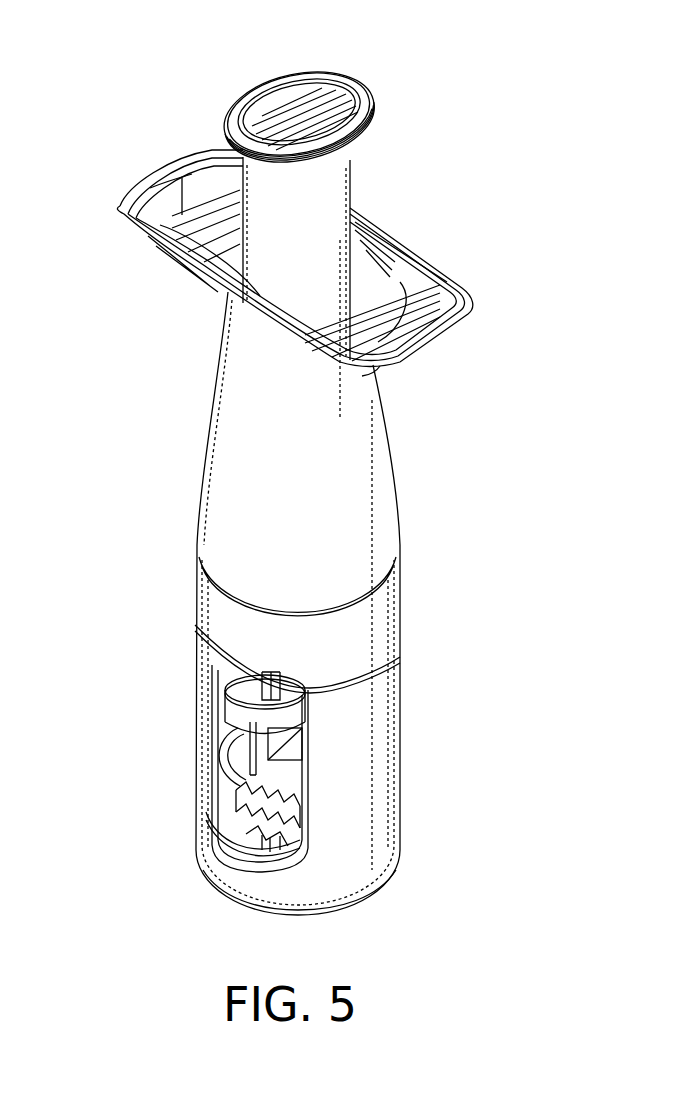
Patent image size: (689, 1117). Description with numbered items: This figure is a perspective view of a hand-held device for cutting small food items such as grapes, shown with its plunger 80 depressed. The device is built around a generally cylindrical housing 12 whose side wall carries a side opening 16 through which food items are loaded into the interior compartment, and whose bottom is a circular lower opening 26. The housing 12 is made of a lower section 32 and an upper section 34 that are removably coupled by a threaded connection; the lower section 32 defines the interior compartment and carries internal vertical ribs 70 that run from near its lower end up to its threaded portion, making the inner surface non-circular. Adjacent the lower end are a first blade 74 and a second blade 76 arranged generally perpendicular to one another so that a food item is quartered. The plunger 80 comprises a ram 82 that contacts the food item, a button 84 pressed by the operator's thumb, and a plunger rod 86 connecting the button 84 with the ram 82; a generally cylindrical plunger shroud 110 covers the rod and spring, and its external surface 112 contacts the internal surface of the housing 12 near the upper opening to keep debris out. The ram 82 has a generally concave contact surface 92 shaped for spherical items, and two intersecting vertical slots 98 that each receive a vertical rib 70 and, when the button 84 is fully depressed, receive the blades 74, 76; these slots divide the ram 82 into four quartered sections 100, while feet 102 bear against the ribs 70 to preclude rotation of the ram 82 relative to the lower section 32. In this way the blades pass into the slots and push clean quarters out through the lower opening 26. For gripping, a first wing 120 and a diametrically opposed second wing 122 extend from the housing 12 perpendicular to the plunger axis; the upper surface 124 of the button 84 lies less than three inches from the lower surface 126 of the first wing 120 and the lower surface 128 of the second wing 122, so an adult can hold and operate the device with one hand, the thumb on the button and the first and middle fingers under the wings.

The housing 12 is at (415, 507).
The side opening 16 is at (192, 722).
The lower opening 26 is at (230, 905).
The lower section 32 is at (450, 633).
The upper section 34 is at (190, 403).
The vertical ribs 70 is at (232, 683).
The first blade 74 is at (275, 848).
The second blade 76 is at (265, 828).
The plunger 80 is at (367, 165).
The ram 82 is at (305, 705).
The button 84 is at (232, 98).
The plunger rod 86 is at (305, 685).
The contact surface 92 is at (305, 730).
The vertical slots 98 is at (232, 750).
The quartered sections 100 is at (312, 748).
The feet 102 is at (300, 800).
The plunger shroud 110 is at (325, 191).
The external surface 112 is at (380, 255).
The first wing 120 is at (472, 297).
The second wing 122 is at (157, 197).
The upper surface 124 is at (317, 93).
The lower surface 126 is at (395, 367).
The lower surface 128 is at (188, 268).